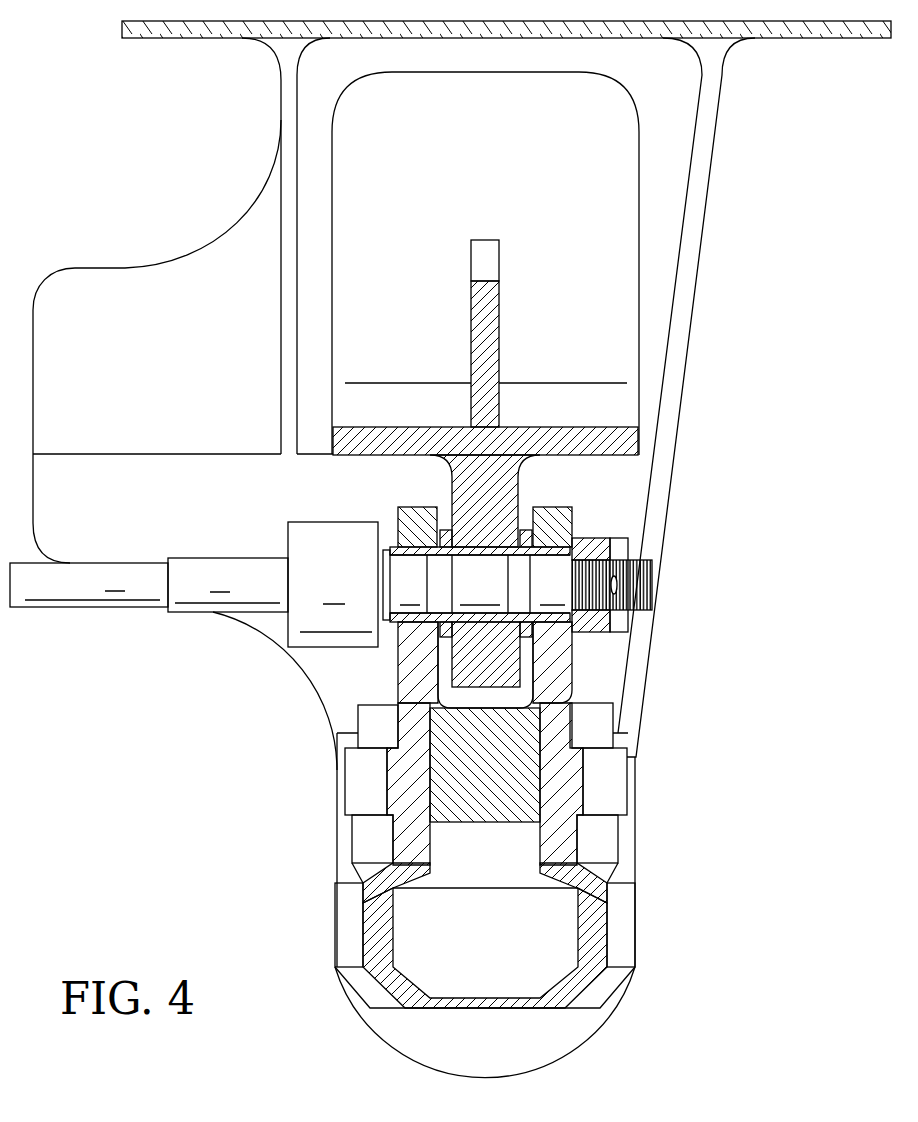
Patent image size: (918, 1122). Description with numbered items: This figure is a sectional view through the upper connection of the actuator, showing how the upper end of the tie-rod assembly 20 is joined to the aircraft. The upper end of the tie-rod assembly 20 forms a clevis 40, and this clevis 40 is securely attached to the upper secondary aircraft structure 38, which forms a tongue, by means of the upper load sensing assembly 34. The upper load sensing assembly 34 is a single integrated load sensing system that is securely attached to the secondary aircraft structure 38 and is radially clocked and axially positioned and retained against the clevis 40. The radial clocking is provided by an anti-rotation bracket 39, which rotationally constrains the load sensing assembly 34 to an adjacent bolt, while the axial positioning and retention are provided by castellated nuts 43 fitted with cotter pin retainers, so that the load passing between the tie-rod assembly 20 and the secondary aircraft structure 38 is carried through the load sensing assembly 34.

The tie-rod assembly 20 is at (644, 912).
The upper load sensing assembly 34 is at (335, 662).
The secondary aircraft structure 38 is at (530, 471).
The anti-rotation bracket 39 is at (573, 633).
The clevis 40 is at (573, 517).
The castellated nuts 43 is at (597, 633).